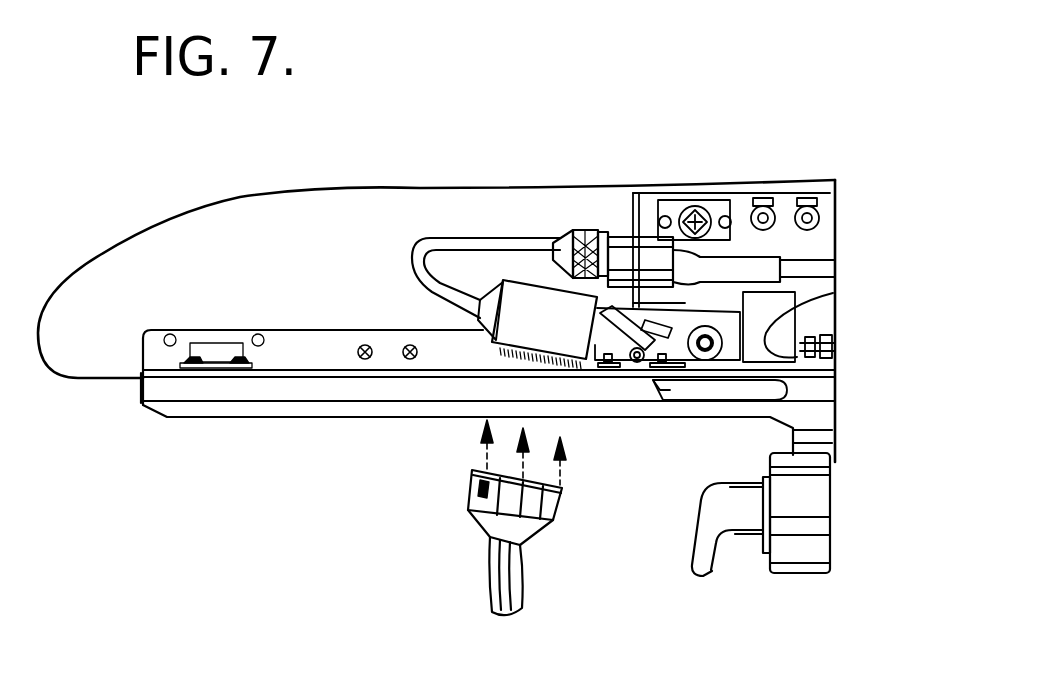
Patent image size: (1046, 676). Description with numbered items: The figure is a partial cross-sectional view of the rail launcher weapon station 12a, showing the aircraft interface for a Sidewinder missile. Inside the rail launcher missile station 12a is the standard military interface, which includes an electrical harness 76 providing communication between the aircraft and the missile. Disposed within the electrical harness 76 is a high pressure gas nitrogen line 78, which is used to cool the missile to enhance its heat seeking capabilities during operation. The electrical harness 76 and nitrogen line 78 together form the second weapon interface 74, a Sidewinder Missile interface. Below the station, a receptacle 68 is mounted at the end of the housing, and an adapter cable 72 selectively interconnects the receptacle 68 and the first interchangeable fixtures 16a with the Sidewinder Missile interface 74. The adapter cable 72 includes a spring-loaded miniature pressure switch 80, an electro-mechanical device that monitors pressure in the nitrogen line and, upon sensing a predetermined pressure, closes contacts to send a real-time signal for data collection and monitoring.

The rail launcher weapon station 12a is at (233, 198).
The electrical harness 76 is at (428, 238).
The high pressure gas nitrogen line 78 is at (833, 293).
The second weapon interface 74 is at (483, 342).
The spring-loaded miniature pressure switch 80 is at (472, 488).
The adapter cable 72 is at (485, 542).
The receptacle 68 is at (763, 477).
The first interchangeable fixtures 16a is at (810, 550).